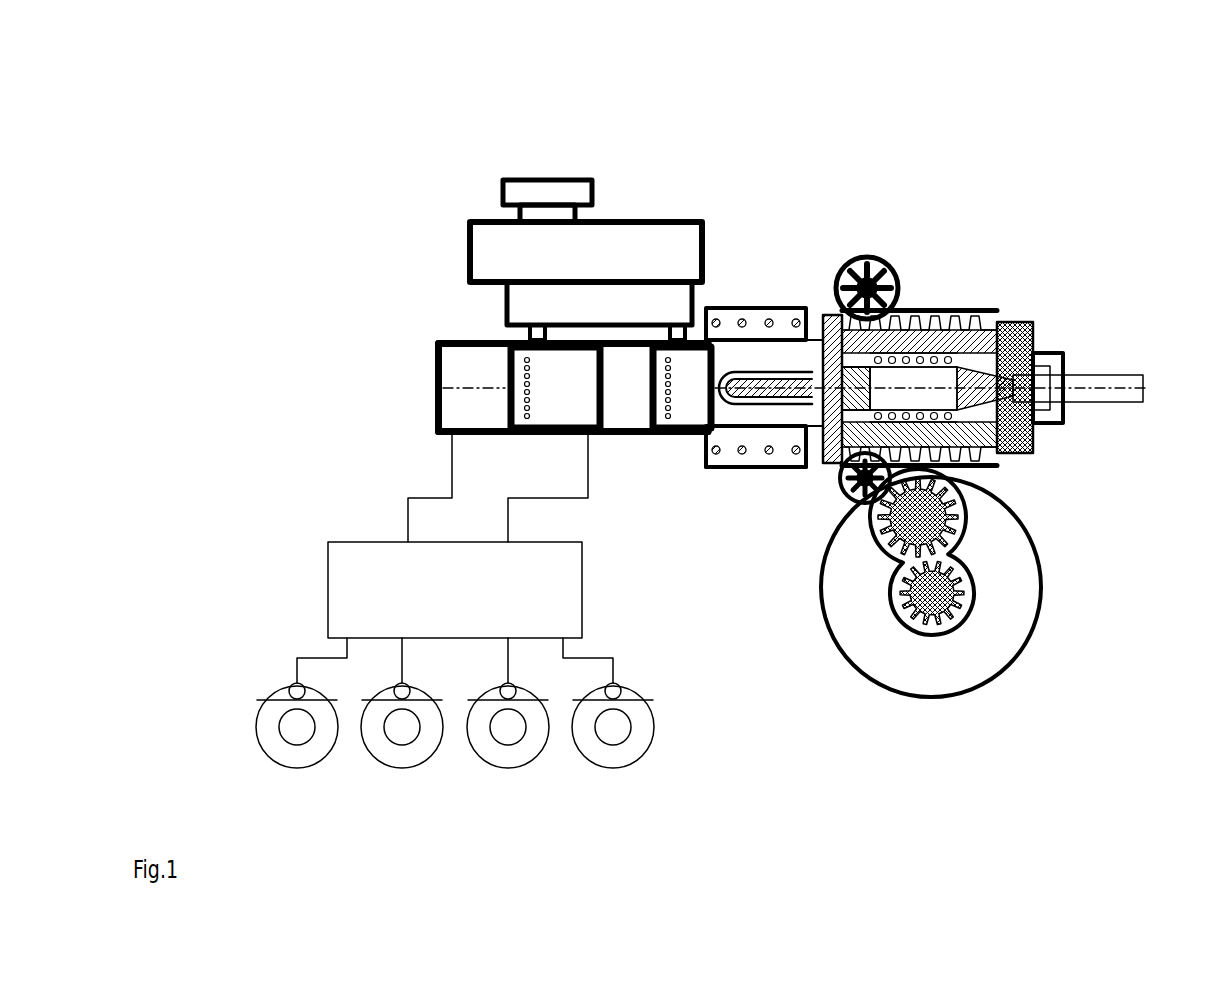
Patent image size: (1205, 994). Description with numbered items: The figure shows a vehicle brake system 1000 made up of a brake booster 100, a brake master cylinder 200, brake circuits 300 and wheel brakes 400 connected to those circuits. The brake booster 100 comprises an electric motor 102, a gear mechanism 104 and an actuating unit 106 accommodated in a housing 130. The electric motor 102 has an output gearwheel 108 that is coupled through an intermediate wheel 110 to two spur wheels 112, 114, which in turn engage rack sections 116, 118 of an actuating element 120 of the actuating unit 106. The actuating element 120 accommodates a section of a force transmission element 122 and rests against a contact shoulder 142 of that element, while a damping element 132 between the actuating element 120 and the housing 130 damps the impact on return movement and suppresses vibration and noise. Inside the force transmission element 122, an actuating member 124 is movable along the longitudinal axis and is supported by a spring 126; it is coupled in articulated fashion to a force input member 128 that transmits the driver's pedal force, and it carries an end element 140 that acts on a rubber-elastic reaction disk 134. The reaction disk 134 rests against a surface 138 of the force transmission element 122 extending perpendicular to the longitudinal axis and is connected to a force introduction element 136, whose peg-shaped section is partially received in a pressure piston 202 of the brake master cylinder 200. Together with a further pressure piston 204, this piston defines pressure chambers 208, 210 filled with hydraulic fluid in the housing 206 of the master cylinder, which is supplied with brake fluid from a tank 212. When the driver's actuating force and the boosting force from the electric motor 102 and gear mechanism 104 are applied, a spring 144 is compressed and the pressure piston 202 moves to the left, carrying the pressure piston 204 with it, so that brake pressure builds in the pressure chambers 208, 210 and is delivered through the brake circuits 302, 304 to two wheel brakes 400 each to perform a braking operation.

The vehicle brake system 1000 is at (1097, 165).
The brake booster 100 is at (1015, 172).
The electric motor 102 is at (995, 627).
The gear mechanism 104 is at (813, 552).
The actuating unit 106 is at (967, 250).
The output gearwheel 108 is at (932, 593).
The intermediate wheel 110 is at (920, 527).
The spur wheel 112 is at (850, 497).
The spur wheel 114 is at (875, 265).
The rack section 116 is at (990, 466).
The rack section 118 is at (975, 335).
The actuating element 120 is at (1000, 457).
The force transmission element 122 is at (930, 338).
The actuating member 124 is at (993, 360).
The spring 126 is at (905, 390).
The force input member 128 is at (1118, 378).
The housing 130 is at (1037, 433).
The damping element 132 is at (1040, 335).
The reaction disk 134 is at (775, 448).
The force introduction element 136 is at (745, 385).
The surface 138 is at (830, 312).
The end element 140 is at (812, 440).
The contact shoulder 142 is at (818, 318).
The spring 144 is at (712, 310).
The brake master cylinder 200 is at (445, 310).
The pressure piston 202 is at (692, 400).
The pressure piston 204 is at (586, 410).
The housing 206 is at (437, 353).
The pressure chamber 208 is at (604, 440).
The pressure chamber 210 is at (455, 403).
The tank 212 is at (630, 222).
The brake circuits 300 is at (372, 493).
The brake circuit 302 is at (408, 523).
The brake circuit 304 is at (510, 514).
The wheel brakes 400 is at (282, 760).